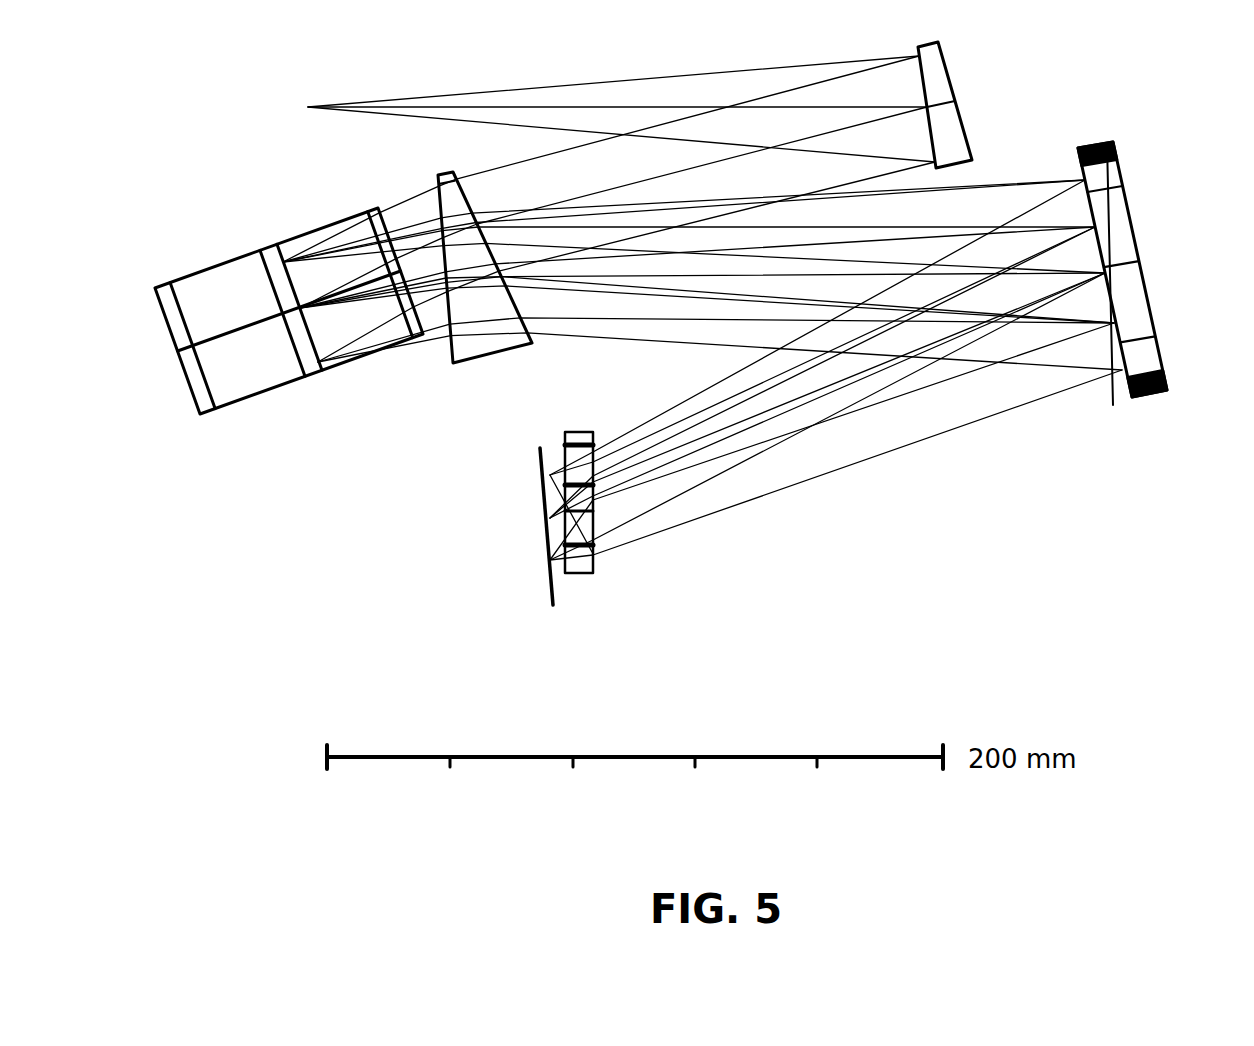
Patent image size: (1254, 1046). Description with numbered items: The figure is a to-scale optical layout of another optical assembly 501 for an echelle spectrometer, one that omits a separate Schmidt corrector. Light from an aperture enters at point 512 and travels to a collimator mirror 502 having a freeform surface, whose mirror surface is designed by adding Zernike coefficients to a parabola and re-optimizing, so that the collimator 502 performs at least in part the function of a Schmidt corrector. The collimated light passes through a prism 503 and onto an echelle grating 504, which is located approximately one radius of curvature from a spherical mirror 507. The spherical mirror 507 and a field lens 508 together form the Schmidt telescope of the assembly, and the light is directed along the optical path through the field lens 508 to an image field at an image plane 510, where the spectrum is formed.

The optical assembly 501 is at (236, 523).
The collimator mirror 502 is at (958, 96).
The prism 503 is at (484, 356).
The echelle grating 504 is at (238, 253).
The spherical mirror 507 is at (1133, 215).
The field lens 508 is at (597, 567).
The image plane 510 is at (550, 578).
The point 512 is at (308, 107).